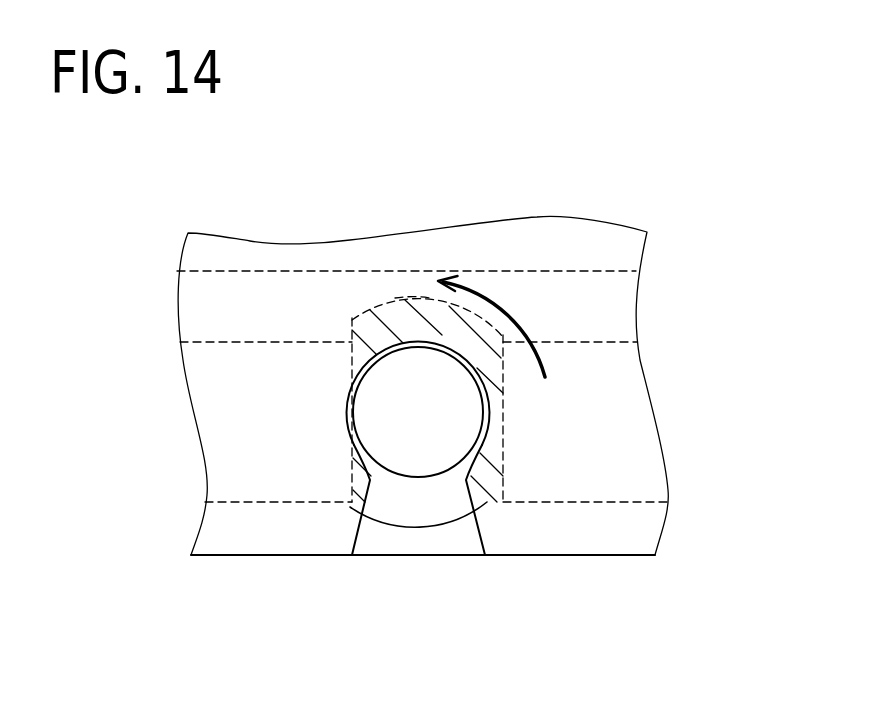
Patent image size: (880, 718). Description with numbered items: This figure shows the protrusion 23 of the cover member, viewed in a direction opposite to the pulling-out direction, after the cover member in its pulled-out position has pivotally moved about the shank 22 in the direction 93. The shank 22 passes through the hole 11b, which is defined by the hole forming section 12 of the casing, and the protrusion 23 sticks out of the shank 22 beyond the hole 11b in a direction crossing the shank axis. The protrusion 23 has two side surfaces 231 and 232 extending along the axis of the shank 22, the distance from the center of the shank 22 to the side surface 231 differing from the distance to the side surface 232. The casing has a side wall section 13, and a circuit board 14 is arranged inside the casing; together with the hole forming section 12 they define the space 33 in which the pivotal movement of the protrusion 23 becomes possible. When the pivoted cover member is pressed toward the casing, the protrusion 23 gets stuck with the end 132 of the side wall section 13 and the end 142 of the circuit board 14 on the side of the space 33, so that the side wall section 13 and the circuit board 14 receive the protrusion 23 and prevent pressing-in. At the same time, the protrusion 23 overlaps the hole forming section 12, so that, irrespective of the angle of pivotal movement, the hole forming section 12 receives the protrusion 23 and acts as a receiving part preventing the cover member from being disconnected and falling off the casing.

The hole forming section 12 is at (623, 378).
The side wall section 13 is at (490, 270).
The end of the side wall section 132 is at (411, 292).
The circuit board 14 is at (436, 555).
The end of the circuit board 142 is at (395, 527).
The shank 22 is at (450, 435).
The protrusion 23 is at (486, 400).
The side surface 231 is at (350, 450).
The side surface 232 is at (503, 407).
The space 33 is at (313, 313).
The direction 93 is at (500, 307).
The hole 11b is at (457, 480).